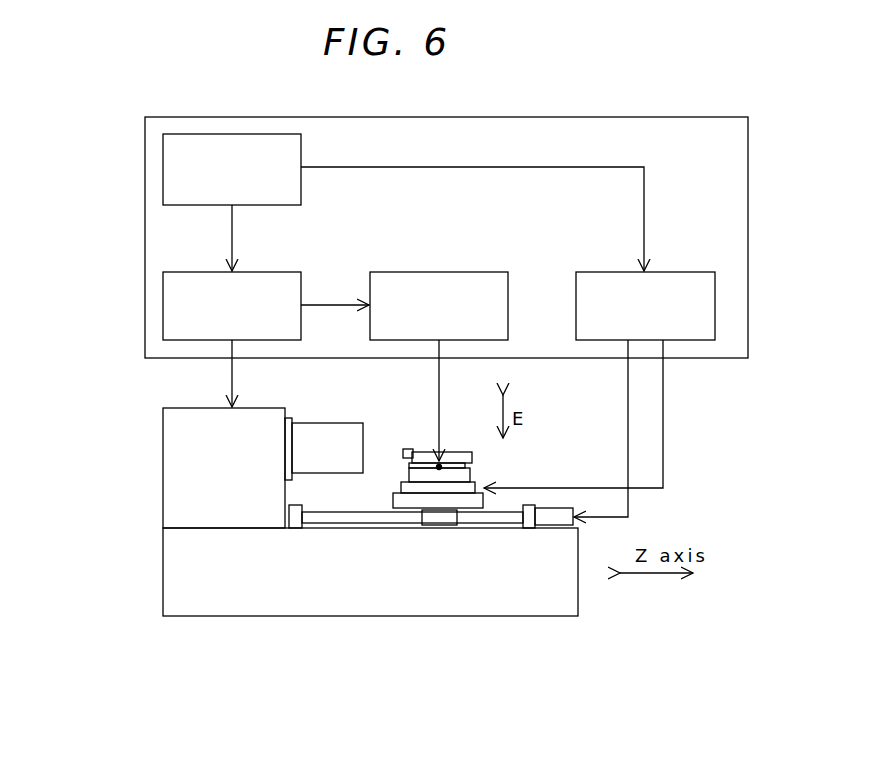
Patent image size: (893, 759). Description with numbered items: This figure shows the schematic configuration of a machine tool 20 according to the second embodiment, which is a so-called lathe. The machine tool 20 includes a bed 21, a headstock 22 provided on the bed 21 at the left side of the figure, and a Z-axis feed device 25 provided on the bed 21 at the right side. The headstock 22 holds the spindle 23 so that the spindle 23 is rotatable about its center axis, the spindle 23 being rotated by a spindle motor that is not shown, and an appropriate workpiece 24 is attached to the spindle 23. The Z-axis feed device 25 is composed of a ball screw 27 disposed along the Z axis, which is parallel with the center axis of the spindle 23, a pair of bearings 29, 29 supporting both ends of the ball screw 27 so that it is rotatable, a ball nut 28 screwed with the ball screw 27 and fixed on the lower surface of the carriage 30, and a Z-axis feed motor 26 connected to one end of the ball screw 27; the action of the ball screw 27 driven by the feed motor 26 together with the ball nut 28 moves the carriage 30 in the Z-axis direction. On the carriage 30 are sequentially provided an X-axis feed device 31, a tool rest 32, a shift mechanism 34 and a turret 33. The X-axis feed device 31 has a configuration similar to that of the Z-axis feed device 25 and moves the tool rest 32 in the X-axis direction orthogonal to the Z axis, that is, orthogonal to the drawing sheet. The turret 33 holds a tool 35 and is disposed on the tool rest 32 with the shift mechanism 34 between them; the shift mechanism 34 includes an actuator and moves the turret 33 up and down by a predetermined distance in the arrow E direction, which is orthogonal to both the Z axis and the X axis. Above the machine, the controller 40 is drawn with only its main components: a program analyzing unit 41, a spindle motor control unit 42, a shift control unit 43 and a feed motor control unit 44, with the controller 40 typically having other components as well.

The machine tool 20 is at (56, 386).
The bed 21 is at (163, 570).
The headstock 22 is at (168, 483).
The spindle 23 is at (288, 418).
The workpiece 24 is at (332, 423).
The Z-axis feed device 25 is at (518, 492).
The Z-axis feed motor 26 is at (553, 525).
The ball screw 27 is at (338, 523).
The ball nut 28 is at (437, 527).
The bearings 29 is at (295, 528).
The carriage 30 is at (405, 508).
The X-axis feed device 31 is at (468, 493).
The tool rest 32 is at (411, 476).
The turret 33 is at (455, 452).
The shift mechanism 34 is at (468, 465).
The tool 35 is at (406, 449).
The controller 40 is at (145, 240).
The program analyzing unit 41 is at (301, 183).
The spindle motor control unit 42 is at (163, 305).
The shift control unit 43 is at (440, 272).
The feed motor control unit 44 is at (672, 272).